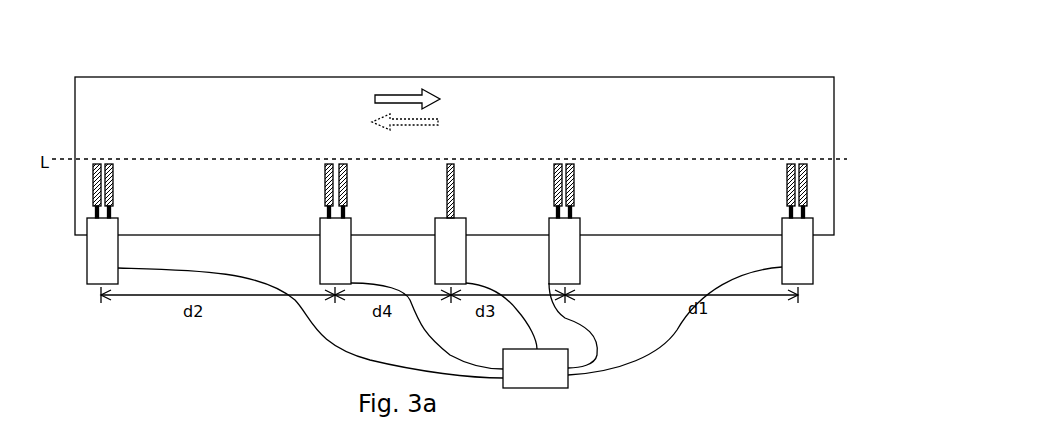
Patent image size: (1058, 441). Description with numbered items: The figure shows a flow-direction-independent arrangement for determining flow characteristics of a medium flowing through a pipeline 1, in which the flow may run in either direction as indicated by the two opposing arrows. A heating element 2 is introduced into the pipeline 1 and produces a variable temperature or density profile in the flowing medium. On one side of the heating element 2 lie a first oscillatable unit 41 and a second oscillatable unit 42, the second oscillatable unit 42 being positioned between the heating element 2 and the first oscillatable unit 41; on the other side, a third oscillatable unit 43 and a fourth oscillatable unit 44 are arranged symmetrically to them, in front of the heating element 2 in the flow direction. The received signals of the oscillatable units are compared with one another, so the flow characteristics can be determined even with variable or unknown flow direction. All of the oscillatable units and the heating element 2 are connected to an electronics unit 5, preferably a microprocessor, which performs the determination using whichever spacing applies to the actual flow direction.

The pipeline 1 is at (454, 130).
The heating element 2 is at (428, 224).
The electronics unit 5 is at (530, 380).
The mechanically oscillatable unit 41 is at (821, 232).
The second oscillatable unit 42 is at (77, 234).
The third oscillatable unit 43 is at (592, 224).
The fourth oscillatable unit 44 is at (303, 224).